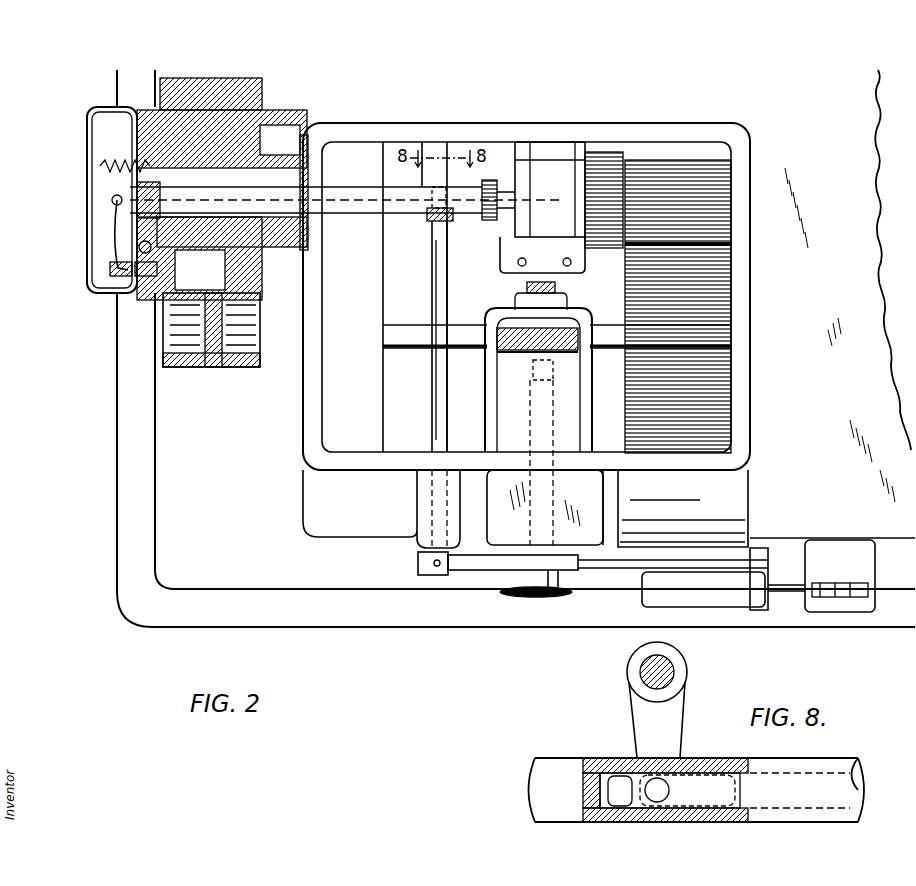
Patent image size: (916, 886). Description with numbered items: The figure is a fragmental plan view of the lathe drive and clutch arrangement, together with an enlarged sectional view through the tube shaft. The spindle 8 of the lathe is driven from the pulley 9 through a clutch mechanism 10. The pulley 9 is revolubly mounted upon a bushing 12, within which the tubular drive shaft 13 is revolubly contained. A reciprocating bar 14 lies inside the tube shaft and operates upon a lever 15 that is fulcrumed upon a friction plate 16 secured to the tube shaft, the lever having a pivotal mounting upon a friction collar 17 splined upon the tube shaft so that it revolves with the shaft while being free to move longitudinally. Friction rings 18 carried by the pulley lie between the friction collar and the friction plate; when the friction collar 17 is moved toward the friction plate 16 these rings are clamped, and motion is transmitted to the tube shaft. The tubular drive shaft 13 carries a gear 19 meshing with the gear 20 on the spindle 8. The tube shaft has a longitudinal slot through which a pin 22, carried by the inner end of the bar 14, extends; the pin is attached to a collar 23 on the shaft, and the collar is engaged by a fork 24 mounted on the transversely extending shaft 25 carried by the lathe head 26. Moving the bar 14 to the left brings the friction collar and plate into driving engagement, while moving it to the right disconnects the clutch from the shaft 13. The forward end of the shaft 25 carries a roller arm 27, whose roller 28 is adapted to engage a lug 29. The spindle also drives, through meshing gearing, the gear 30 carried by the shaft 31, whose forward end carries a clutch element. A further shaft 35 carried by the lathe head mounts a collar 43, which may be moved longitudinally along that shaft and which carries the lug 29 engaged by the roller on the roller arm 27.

In FIG. 2, the spindle 8 is at (462, 215).
In FIG. 2, the pulley 9 is at (195, 335).
In FIG. 2, the clutch mechanism 10 is at (125, 243).
In FIG. 2, the bushing 12 is at (137, 232).
In FIG. 2, the tubular drive shaft 13 is at (332, 186).
In FIG. 8, the tubular drive shaft 13 is at (545, 768).
In FIG. 2, the reciprocating bar 14 is at (130, 192).
In FIG. 8, the reciprocating bar 14 is at (700, 790).
In FIG. 2, the lever 15 is at (120, 222).
In FIG. 2, the friction plate 16 is at (130, 282).
In FIG. 2, the friction collar 17 is at (118, 268).
In FIG. 2, the friction rings 18 is at (125, 300).
In FIG. 2, the gear 19 is at (650, 190).
In FIG. 2, the gear 20 is at (718, 292).
In FIG. 2, the pin 22 is at (440, 186).
In FIG. 8, the pin 22 is at (655, 788).
In FIG. 2, the collar 23 is at (427, 208).
In FIG. 2, the fork 24 is at (465, 327).
In FIG. 8, the fork 24 is at (645, 697).
In FIG. 2, the transversely extending shaft 25 is at (432, 290).
In FIG. 8, the transversely extending shaft 25 is at (670, 676).
In FIG. 2, the lathe head 26 is at (366, 505).
In FIG. 2, the roller arm 27 is at (477, 572).
In FIG. 2, the roller 28 is at (537, 596).
In FIG. 2, the lug 29 is at (535, 312).
In FIG. 2, the gear 30 is at (567, 330).
In FIG. 2, the shaft 31 is at (520, 353).
In FIG. 2, the shaft 35 is at (553, 512).
In FIG. 2, the collar 43 is at (518, 578).